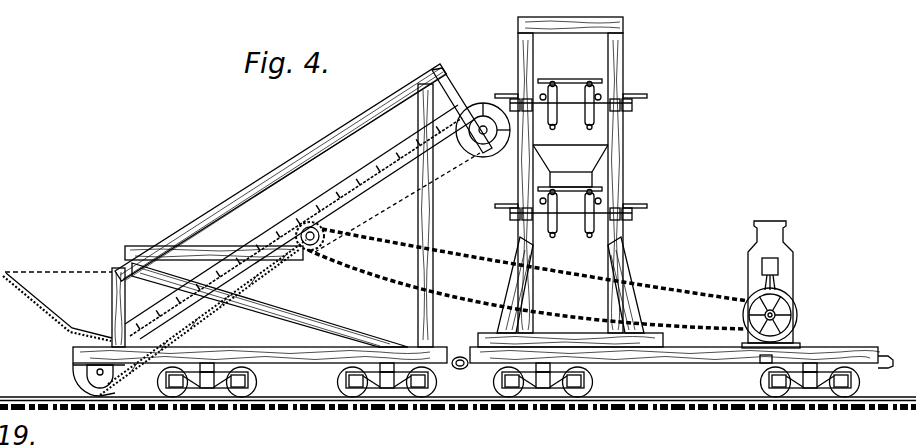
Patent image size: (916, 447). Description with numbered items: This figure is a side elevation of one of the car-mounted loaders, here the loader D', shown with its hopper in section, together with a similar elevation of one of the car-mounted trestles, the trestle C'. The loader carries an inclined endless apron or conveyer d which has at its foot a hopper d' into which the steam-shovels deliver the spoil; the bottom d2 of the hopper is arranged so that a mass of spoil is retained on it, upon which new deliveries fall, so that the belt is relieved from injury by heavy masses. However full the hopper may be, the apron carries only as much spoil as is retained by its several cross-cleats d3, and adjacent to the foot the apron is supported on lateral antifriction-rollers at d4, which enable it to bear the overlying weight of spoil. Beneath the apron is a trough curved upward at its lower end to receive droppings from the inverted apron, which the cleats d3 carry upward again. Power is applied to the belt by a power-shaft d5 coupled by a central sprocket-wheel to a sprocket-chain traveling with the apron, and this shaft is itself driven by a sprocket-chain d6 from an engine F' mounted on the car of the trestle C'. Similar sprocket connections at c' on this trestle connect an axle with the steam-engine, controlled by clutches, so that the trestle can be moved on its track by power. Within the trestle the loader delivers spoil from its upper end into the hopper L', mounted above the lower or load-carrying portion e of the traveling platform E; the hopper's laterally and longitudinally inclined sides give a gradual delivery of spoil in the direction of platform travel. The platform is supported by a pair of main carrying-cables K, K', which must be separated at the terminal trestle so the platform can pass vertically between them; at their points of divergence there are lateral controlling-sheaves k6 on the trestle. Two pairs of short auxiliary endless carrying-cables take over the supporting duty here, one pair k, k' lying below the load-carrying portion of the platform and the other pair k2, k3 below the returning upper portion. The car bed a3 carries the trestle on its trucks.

The car-mounted loader D' is at (281, 172).
The endless apron or conveyer d is at (296, 227).
The cross-cleats d3 is at (398, 162).
The power-shaft d5 is at (298, 235).
The hopper d' is at (57, 306).
The bottom of the hopper d2 is at (105, 307).
The lateral antifriction-rollers d4 is at (203, 317).
The sprocket-chain d6 is at (528, 279).
The car-mounted trestle C' is at (577, 175).
The main carrying-cable K' is at (517, 128).
The main carrying-cable K is at (624, 133).
The lateral controlling-sheaves k6 is at (571, 154).
The platform E is at (658, 160).
The auxiliary endless carrying-cable k3 is at (553, 114).
The auxiliary endless carrying-cable k2 is at (594, 114).
The hopper L' is at (556, 137).
The lower or load-carrying portion of the platform e is at (571, 188).
The auxiliary endless carrying-cable k' is at (554, 226).
The auxiliary endless carrying-cable k is at (590, 226).
The engine F' is at (776, 284).
The car a3 is at (681, 371).
The sprocket-chain c' is at (748, 369).